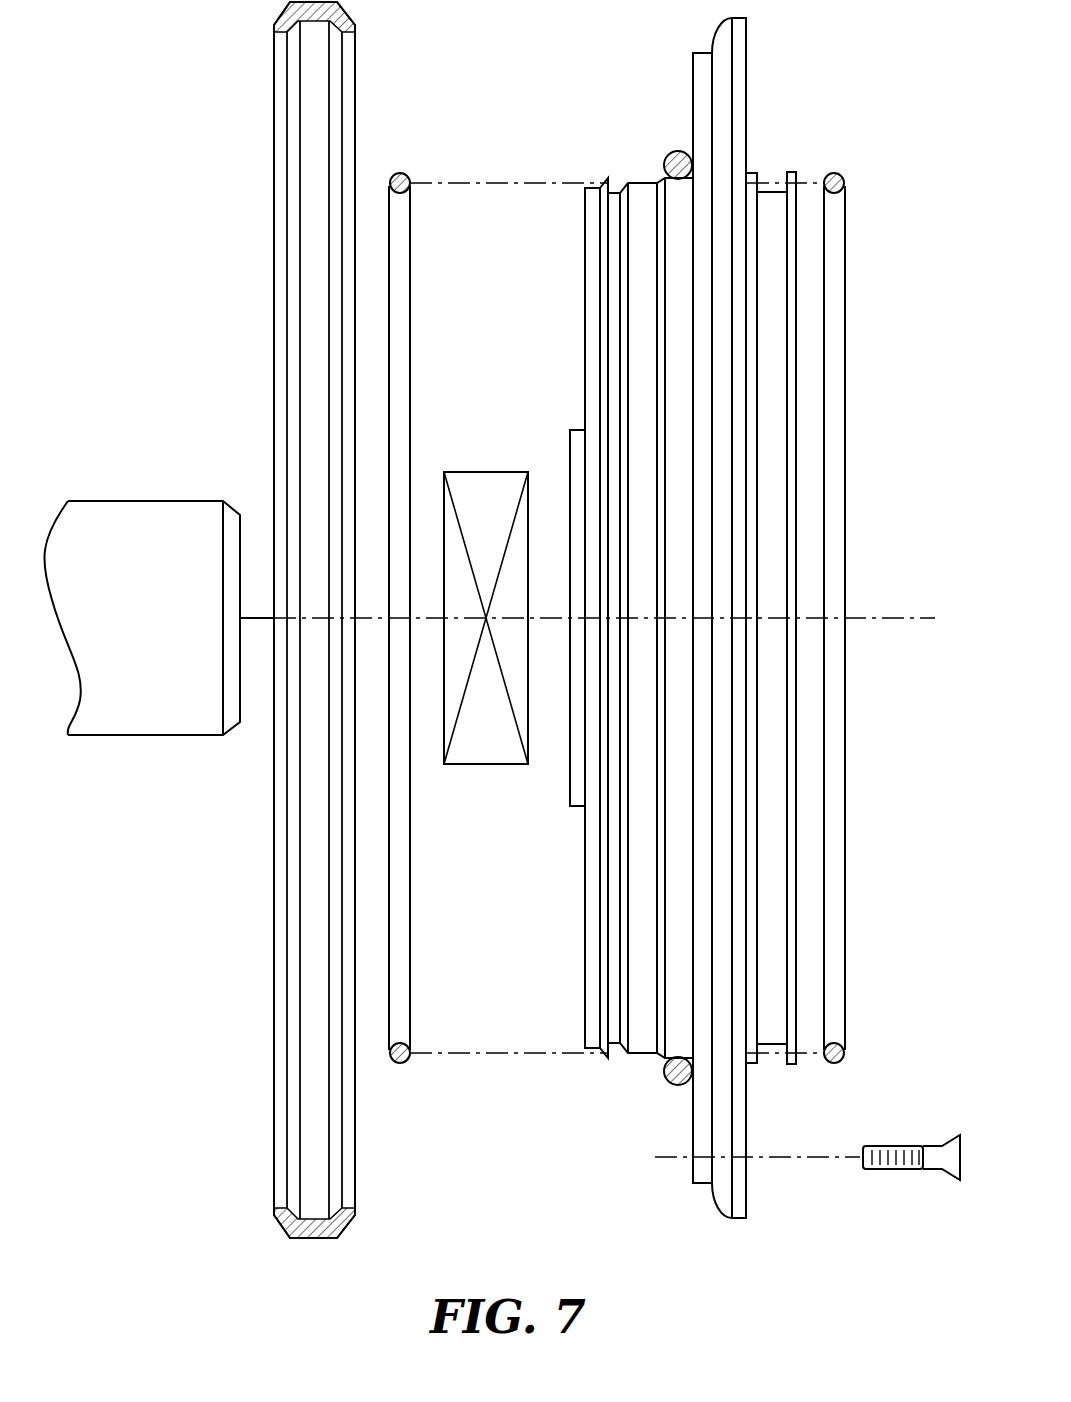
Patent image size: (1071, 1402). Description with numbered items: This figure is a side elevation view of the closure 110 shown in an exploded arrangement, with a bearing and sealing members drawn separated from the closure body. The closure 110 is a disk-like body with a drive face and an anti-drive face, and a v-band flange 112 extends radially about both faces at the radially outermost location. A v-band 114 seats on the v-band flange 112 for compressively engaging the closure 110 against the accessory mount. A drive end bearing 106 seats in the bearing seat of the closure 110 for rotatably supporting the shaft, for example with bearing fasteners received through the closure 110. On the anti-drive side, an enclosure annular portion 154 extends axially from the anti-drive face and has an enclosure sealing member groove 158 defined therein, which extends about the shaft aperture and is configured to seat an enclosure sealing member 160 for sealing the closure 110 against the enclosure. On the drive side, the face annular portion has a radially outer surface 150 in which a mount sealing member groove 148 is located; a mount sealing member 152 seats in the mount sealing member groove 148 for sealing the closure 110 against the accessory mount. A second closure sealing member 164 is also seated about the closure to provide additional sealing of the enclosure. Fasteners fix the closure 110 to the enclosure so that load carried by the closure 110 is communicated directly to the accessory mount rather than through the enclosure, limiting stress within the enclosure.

The drive end bearing 106 is at (493, 471).
The closure 110 is at (700, 183).
The v-band flange 112 is at (738, 78).
The v-band 114 is at (270, 165).
The mount sealing member groove 148 is at (773, 333).
The radially outer surface 150 is at (752, 1068).
The mount sealing member 152 is at (845, 1000).
The enclosure annular portion 154 is at (570, 792).
The enclosure sealing member groove 158 is at (612, 985).
The enclosure sealing member 160 is at (410, 240).
The second closure sealing member 164 is at (672, 1083).